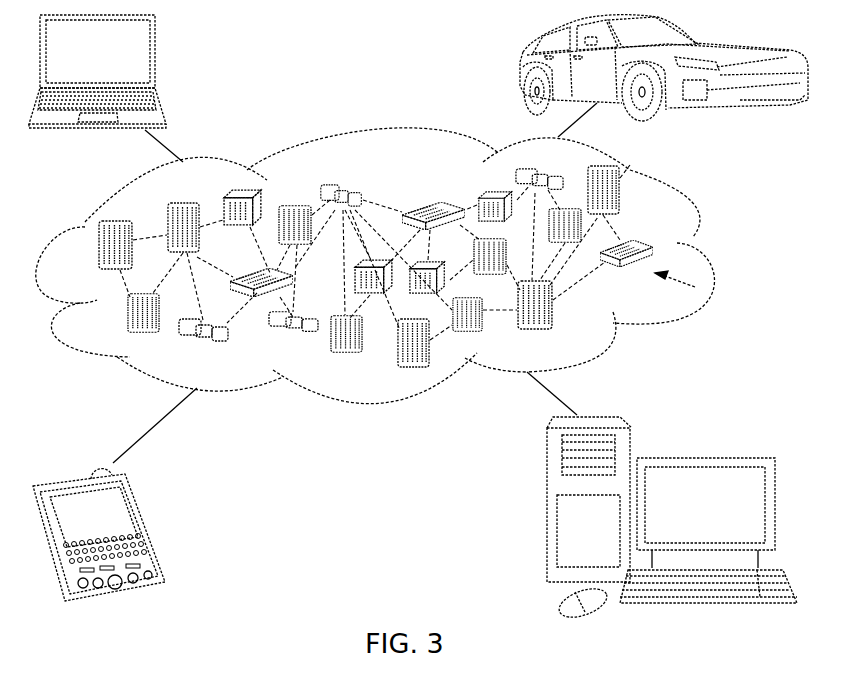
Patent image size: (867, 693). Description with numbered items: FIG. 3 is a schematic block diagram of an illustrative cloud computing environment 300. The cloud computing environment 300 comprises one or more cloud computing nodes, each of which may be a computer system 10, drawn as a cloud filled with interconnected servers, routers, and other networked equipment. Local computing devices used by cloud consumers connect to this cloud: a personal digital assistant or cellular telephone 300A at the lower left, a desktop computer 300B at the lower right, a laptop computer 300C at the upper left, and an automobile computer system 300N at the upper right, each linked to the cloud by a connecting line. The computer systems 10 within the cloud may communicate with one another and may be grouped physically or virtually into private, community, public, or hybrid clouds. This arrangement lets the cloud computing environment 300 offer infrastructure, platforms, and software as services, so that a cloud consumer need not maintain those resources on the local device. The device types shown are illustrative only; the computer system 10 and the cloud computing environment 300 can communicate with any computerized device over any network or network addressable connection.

The computer system 10 is at (690, 289).
The cloud computing environment 300 is at (703, 250).
The personal digital assistant (PDA) or cellular telephone 300A is at (150, 525).
The desktop computer 300B is at (705, 458).
The laptop computer 300C is at (162, 57).
The automobile computer system 300N is at (518, 69).